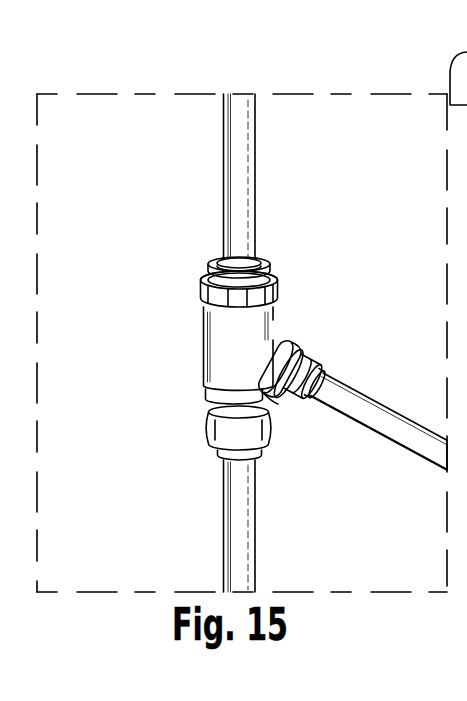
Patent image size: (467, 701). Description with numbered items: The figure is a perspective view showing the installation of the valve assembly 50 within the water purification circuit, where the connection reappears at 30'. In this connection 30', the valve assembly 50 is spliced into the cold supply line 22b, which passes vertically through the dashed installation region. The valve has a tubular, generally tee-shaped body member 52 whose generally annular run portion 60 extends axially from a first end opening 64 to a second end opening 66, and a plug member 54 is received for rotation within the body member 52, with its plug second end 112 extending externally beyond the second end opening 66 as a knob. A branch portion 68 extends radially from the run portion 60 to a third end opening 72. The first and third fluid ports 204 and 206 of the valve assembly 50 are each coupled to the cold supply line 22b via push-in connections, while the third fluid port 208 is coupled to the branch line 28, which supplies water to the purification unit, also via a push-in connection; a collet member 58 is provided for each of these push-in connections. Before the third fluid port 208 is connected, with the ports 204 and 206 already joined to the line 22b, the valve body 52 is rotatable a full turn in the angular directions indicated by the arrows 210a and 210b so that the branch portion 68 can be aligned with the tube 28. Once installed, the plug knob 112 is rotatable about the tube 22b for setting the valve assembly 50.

The connection 30' is at (242, 302).
The cold supply line 22b is at (255, 121).
The valve assembly 50 is at (396, 182).
The plug member 54 is at (266, 260).
The collet member 58 is at (265, 254).
The third fluid port 206 is at (212, 258).
The plug second end 112 is at (210, 258).
The second end opening 66 is at (200, 283).
The body member 52 is at (203, 350).
The run portion 60 is at (204, 375).
The first end opening 64 is at (208, 428).
The first fluid port 204 is at (217, 458).
The third end opening 72 is at (297, 344).
The third fluid port 208 is at (314, 405).
The branch portion 68 is at (276, 410).
The branch tube 28 is at (432, 466).
The arrow 210a is at (290, 337).
The arrow 210b is at (182, 333).